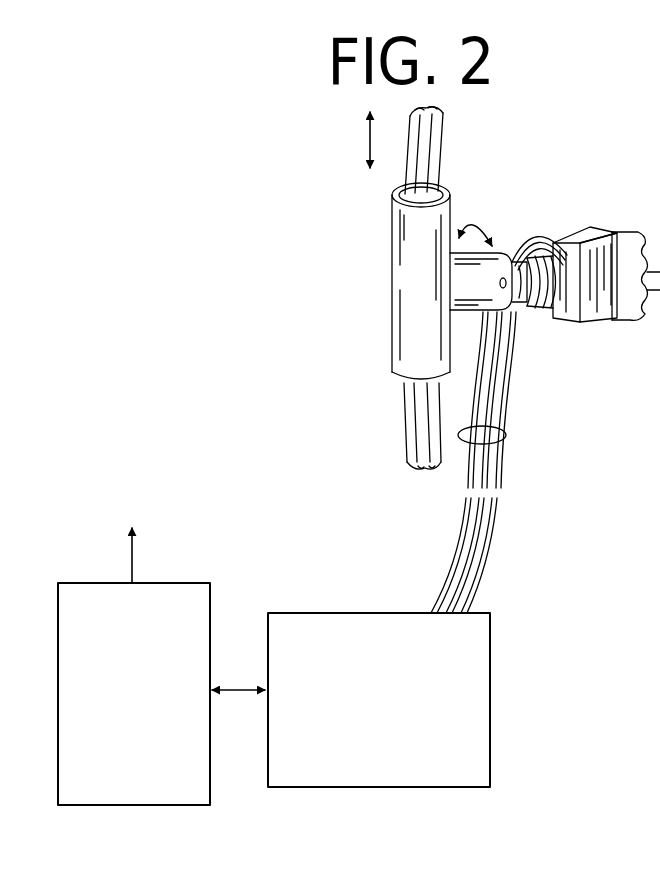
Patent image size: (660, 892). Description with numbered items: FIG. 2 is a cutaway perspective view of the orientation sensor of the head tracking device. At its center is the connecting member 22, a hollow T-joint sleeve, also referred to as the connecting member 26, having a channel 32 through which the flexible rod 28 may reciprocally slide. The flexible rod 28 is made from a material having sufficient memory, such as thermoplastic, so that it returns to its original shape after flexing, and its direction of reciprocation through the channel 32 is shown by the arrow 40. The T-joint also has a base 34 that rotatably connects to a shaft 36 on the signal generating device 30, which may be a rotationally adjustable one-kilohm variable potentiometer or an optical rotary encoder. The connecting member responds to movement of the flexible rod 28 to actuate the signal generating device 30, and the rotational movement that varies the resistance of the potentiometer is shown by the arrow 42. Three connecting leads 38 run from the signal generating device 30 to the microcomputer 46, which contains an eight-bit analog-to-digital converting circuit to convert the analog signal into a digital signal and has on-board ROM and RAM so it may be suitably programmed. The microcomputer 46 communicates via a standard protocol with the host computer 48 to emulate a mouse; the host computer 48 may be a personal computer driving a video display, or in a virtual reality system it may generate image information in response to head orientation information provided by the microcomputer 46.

The connecting member 22 is at (528, 163).
The connecting member 26 is at (417, 325).
The flexible rod 28 is at (417, 421).
The signal generating device 30 is at (567, 322).
The channel 32 is at (398, 181).
The base 34 is at (475, 283).
The shaft 36 is at (545, 298).
The connecting leads 38 is at (506, 433).
The arrow 40 is at (366, 141).
The arrow 42 is at (480, 218).
The microcomputer 46 is at (467, 657).
The host computer 48 is at (185, 762).